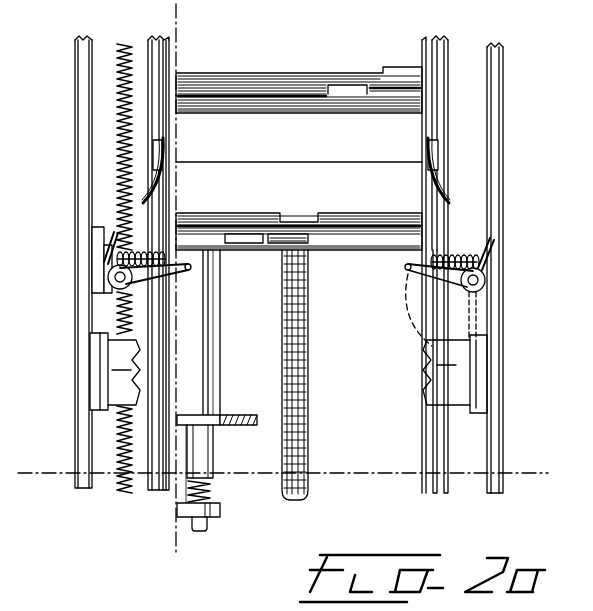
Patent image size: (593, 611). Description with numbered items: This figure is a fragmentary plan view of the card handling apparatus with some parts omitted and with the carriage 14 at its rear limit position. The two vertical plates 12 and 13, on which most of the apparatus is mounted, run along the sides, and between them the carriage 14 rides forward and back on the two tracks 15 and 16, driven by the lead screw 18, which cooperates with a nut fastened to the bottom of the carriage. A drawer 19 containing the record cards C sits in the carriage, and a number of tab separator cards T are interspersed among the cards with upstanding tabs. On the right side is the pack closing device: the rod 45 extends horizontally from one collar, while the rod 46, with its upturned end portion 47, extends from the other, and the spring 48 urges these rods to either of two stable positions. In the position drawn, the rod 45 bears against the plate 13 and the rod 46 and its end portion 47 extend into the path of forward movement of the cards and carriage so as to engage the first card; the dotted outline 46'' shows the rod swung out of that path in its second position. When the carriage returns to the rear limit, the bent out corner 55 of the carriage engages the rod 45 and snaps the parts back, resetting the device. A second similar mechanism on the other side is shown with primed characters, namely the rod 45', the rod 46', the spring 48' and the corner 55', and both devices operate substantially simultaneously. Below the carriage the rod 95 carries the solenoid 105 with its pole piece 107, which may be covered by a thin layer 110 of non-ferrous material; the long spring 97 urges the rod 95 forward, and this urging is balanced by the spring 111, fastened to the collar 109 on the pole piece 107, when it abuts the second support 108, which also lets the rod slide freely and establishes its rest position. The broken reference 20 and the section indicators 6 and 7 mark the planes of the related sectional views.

The section line 6 is at (172, 13).
The section line 7 is at (26, 478).
The vertical plate 12 is at (75, 92).
The vertical plate 13 is at (503, 98).
The carriage 14 is at (440, 40).
The track 15 is at (150, 492).
The track 16 is at (433, 444).
The lead screw 18 is at (308, 440).
The drawer 19 is at (420, 40).
The housing block 20 is at (288, 373).
The rod 45 is at (509, 254).
The rod 45' is at (72, 260).
The rod 46 is at (431, 305).
The rod 46' is at (179, 275).
The rod in second position 46'' is at (506, 316).
The upturned end portion 47 is at (407, 268).
The spring 48 is at (457, 243).
The spring 48' is at (166, 230).
The bent out corner 55 is at (416, 170).
The bent out corner 55' is at (178, 170).
The rod 95 is at (210, 500).
The long spring 97 is at (119, 44).
The solenoid 105 is at (220, 336).
The pole piece 107 is at (212, 425).
The second support 108 is at (216, 514).
The collar 109 is at (213, 460).
The thin layer of non-ferrous material 110 is at (226, 415).
The spring 111 is at (208, 492).
The record cards C is at (218, 95).
The tab separator cards T is at (348, 93).